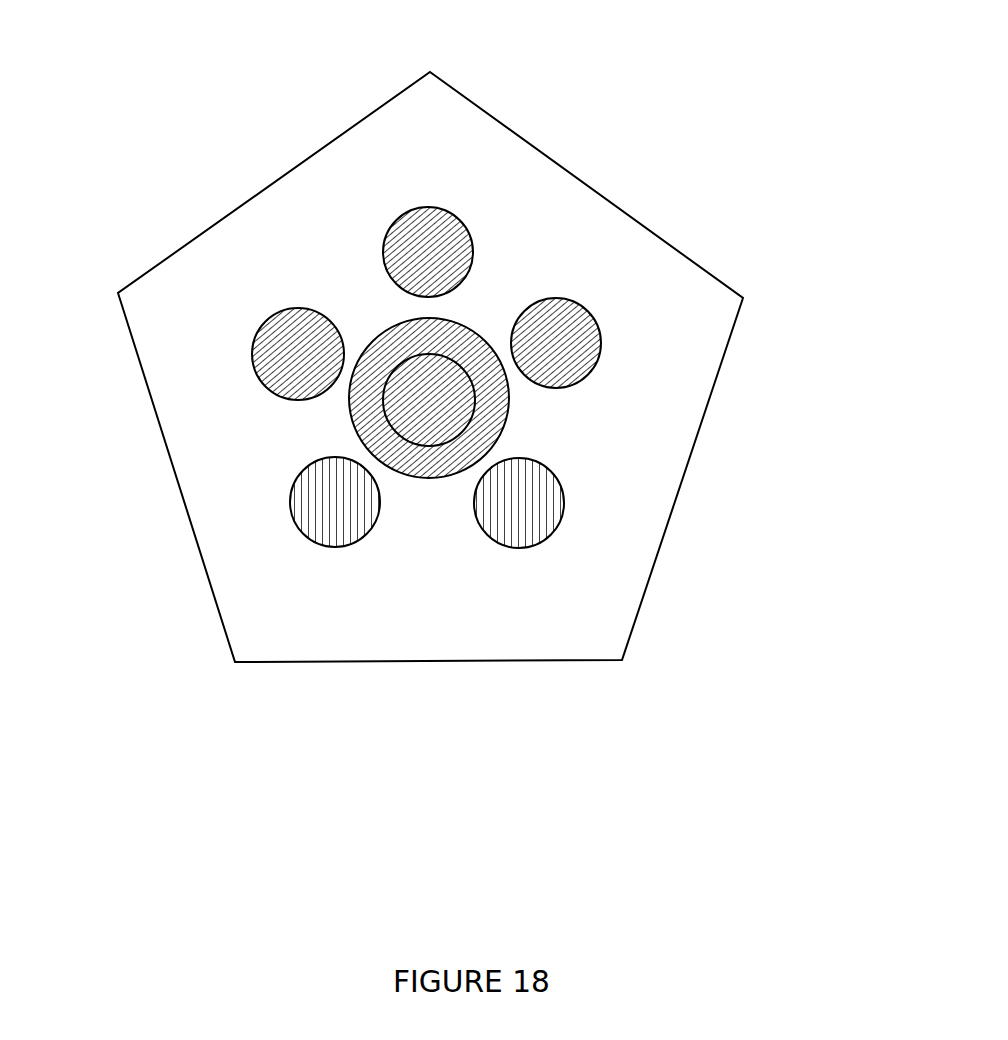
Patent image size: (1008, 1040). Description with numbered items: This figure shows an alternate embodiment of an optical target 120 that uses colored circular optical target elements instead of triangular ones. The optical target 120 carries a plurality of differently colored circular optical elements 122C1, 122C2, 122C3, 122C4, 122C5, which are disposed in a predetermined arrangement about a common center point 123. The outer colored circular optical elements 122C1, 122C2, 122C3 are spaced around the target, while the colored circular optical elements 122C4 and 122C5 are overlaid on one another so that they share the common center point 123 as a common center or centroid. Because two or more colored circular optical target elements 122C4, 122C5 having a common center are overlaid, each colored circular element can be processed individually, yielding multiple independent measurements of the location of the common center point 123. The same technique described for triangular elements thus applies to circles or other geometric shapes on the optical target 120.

The optical target 120 is at (665, 237).
The colored circular optical element 122C1 is at (428, 207).
The colored circular optical element 122C2 is at (252, 352).
The colored circular optical element 122C3 is at (333, 550).
The colored circular optical element 122C4 is at (440, 480).
The colored circular optical element 122C5 is at (377, 403).
The common center point 123 is at (427, 402).